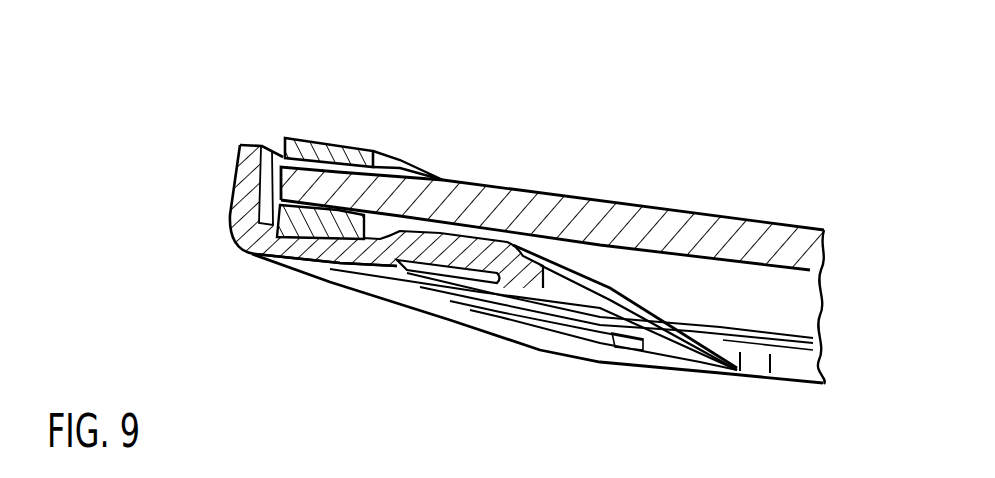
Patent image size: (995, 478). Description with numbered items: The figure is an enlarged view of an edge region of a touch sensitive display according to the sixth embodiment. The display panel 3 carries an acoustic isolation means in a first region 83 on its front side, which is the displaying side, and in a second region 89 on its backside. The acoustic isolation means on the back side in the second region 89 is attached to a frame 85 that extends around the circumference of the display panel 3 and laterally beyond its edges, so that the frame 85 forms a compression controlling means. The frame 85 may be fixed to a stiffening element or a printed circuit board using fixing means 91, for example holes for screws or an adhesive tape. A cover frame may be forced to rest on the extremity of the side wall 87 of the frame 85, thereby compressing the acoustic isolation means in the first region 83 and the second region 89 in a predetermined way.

The display panel 3 is at (670, 222).
The first region 83 is at (342, 150).
The frame 85 is at (313, 245).
The side wall 87 is at (213, 204).
The second region 89 is at (297, 218).
The fixing means 91 is at (450, 278).